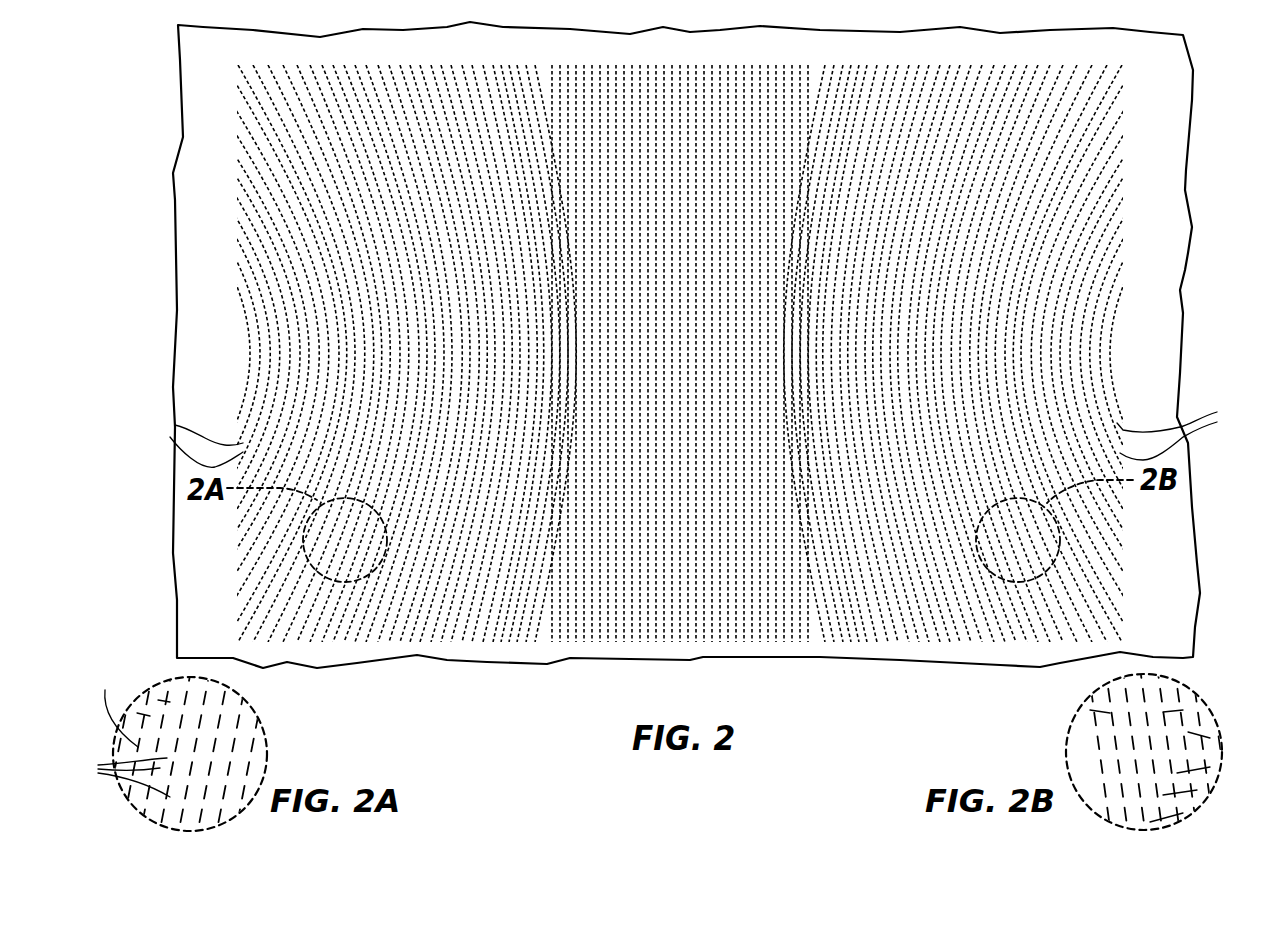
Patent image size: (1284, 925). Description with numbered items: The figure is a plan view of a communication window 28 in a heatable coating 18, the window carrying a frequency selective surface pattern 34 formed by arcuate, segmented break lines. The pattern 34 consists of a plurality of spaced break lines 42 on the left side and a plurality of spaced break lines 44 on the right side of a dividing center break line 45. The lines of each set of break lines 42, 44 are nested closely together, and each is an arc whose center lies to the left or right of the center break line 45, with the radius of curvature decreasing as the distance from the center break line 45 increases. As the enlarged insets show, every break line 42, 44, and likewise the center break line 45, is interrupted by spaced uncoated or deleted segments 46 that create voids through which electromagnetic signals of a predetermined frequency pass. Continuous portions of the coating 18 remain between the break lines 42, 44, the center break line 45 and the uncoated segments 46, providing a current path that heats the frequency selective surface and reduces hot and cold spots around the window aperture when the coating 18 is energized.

In FIG. 2, the coating 18 is at (207, 118).
In FIG. 2A, the coating 18 is at (160, 700).
In FIG. 2B, the coating 18 is at (1163, 712).
In FIG. 2, the communication window 28 is at (1166, 99).
In FIG. 2, the FSS pattern 34 is at (1158, 221).
In FIG. 2, the break lines 42 is at (422, 74).
In FIG. 2A, the break lines 42 is at (238, 774).
In FIG. 2, the break lines 44 is at (1027, 74).
In FIG. 2B, the break lines 44 is at (1135, 728).
In FIG. 2, the center break line 45 is at (681, 66).
In FIG. 2A, the uncoated segments 46 is at (100, 766).
In FIG. 2B, the uncoated segments 46 is at (1150, 822).